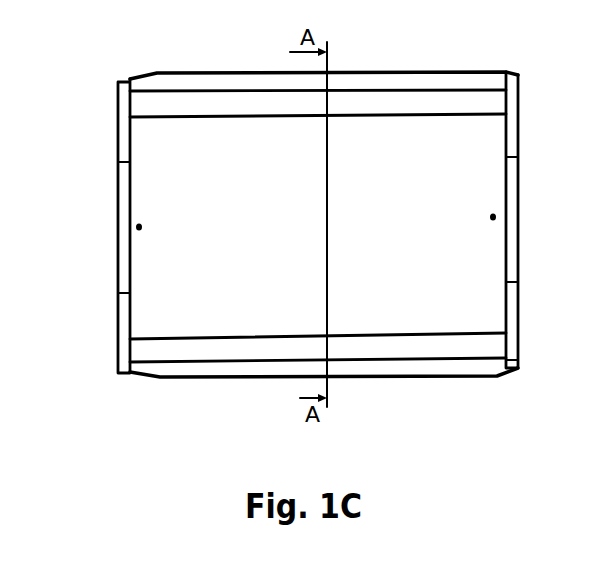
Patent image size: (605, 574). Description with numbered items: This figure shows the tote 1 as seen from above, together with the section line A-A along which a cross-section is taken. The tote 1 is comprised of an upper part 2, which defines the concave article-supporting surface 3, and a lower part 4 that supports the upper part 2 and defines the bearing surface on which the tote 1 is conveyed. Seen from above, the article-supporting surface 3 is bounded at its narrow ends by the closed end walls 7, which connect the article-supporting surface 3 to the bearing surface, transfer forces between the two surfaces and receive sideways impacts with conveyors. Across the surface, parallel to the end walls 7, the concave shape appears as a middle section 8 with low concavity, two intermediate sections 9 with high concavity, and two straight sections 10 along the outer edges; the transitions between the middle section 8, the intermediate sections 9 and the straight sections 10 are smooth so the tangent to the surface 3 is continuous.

The tote 1 is at (516, 62).
The upper part 2 is at (475, 310).
The article-supporting surface 3 is at (392, 239).
The lower part 4 is at (598, 374).
The end walls 7 is at (113, 180).
The middle section 8 is at (270, 197).
The intermediate sections 9 is at (248, 101).
The straight sections 10 is at (398, 83).